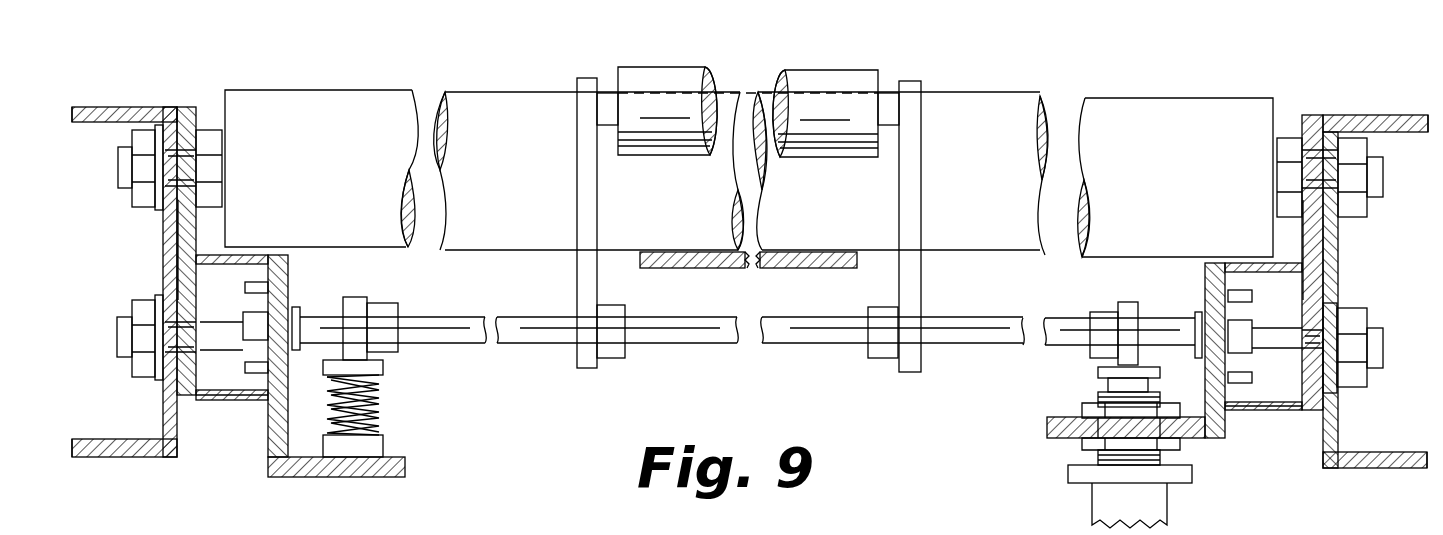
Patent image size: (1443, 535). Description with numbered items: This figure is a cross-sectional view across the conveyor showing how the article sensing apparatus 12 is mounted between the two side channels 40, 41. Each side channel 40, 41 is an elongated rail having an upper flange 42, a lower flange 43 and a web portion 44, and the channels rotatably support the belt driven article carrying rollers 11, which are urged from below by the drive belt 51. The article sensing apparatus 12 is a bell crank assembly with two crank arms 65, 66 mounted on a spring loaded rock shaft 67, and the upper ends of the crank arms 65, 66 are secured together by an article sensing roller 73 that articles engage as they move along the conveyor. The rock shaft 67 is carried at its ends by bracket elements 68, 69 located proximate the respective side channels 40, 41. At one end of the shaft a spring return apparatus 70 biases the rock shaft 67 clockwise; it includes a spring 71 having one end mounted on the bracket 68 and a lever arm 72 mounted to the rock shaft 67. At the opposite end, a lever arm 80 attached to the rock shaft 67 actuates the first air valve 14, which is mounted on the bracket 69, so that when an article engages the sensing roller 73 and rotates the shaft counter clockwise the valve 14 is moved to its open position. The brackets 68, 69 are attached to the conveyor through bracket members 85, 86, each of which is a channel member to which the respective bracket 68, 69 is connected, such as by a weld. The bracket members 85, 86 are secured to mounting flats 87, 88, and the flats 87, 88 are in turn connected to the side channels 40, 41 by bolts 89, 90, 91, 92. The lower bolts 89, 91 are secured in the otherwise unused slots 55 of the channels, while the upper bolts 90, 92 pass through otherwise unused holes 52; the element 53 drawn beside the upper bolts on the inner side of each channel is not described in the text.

The article carrying roller 11 is at (363, 110).
The article sensing apparatus 12 is at (552, 80).
The first air valve 14 is at (1052, 470).
The side channel 40 is at (126, 90).
The side channel 41 is at (1416, 98).
The upper flange 42 is at (82, 106).
The lower flange 43 is at (74, 457).
The web portion 44 is at (160, 416).
The drive belt 51 is at (760, 274).
The hole 52 is at (188, 107).
The nut 53 is at (226, 183).
The slot 55 is at (192, 266).
The crank arm 65 is at (580, 200).
The crank arm 66 is at (918, 197).
The rock shaft 67 is at (476, 340).
The bracket element 68 is at (270, 474).
The bracket element 69 is at (1222, 440).
The spring return apparatus 70 is at (430, 412).
The spring 71 is at (380, 400).
The lever arm 72 is at (355, 308).
The article sensing roller 73 is at (775, 88).
The lever arm 80 is at (1128, 330).
The bracket member 85 is at (218, 402).
The bracket member 86 is at (1258, 410).
The mounting flat 87 is at (186, 234).
The mounting flat 88 is at (1312, 248).
The bolt 89 is at (118, 340).
The bolt 90 is at (124, 174).
The bolt 91 is at (1380, 347).
The bolt 92 is at (1384, 178).